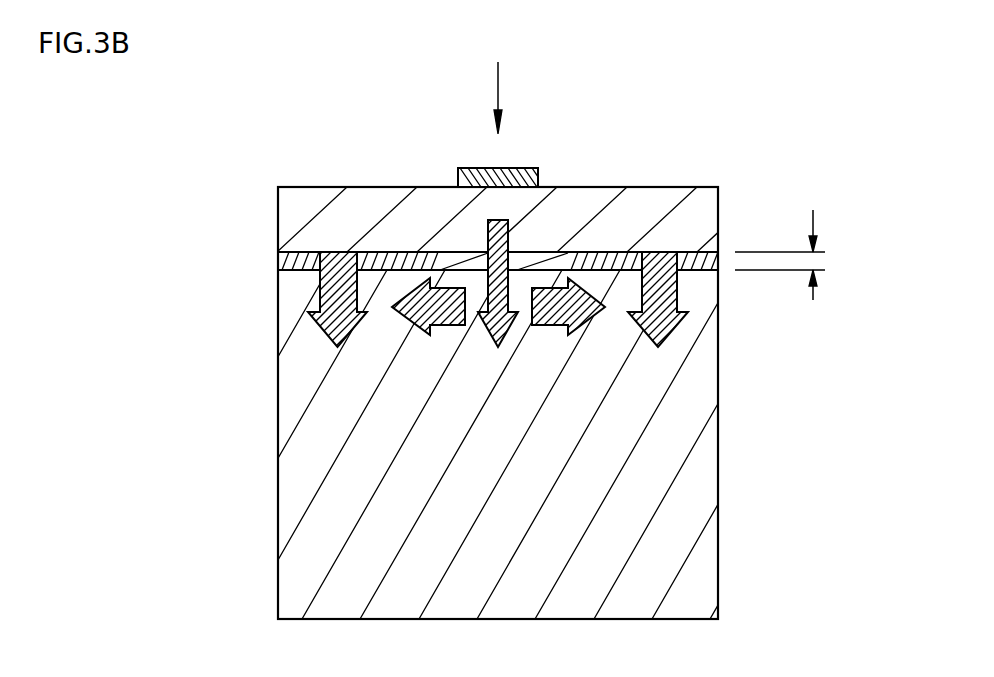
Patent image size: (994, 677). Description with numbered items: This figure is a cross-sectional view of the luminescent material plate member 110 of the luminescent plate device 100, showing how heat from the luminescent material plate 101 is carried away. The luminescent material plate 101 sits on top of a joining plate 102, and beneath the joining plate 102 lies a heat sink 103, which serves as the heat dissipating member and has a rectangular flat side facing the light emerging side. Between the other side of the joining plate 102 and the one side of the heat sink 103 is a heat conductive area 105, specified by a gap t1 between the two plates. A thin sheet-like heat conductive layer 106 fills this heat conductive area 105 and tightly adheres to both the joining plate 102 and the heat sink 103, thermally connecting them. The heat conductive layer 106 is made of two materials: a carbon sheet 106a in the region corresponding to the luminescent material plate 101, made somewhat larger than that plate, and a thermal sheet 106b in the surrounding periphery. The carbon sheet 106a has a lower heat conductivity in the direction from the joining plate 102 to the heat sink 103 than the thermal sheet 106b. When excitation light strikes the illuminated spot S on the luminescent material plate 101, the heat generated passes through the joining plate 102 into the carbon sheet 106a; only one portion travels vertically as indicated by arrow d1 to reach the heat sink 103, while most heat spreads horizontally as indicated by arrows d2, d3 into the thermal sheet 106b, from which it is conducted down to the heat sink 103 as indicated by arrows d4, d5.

The luminescent plate device 100 is at (578, 355).
The luminescent material plate member 110 is at (750, 167).
The luminescent material plate 101 is at (528, 168).
The joining plate 102 is at (325, 222).
The heat sink 103 is at (705, 455).
The heat conductive area 105 is at (260, 265).
The heat conductive layer 106 is at (584, 166).
The carbon sheet 106a is at (477, 262).
The thermal sheet 106b is at (700, 255).
The arrow d1 is at (495, 326).
The arrow d2 is at (408, 296).
The arrow d3 is at (568, 253).
The arrow d4 is at (335, 327).
The arrow d5 is at (668, 328).
The illuminated spot S is at (497, 84).
The gap t1 is at (796, 255).